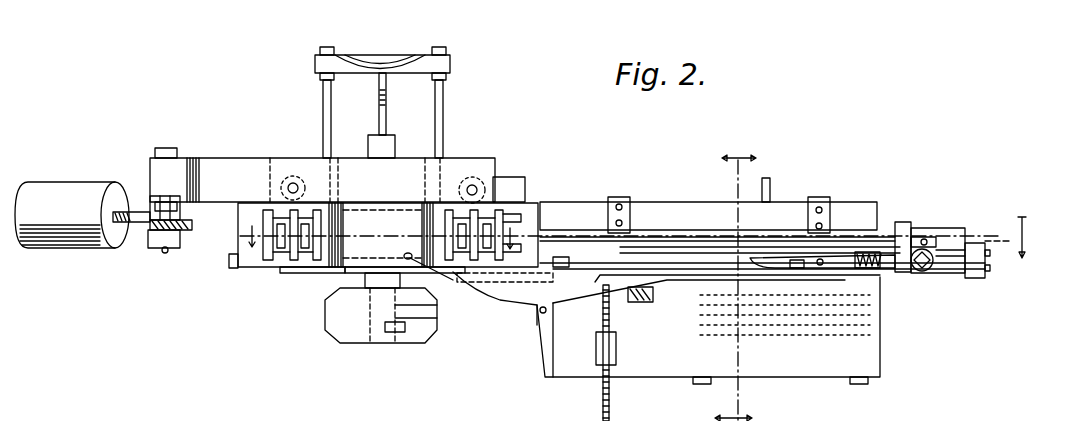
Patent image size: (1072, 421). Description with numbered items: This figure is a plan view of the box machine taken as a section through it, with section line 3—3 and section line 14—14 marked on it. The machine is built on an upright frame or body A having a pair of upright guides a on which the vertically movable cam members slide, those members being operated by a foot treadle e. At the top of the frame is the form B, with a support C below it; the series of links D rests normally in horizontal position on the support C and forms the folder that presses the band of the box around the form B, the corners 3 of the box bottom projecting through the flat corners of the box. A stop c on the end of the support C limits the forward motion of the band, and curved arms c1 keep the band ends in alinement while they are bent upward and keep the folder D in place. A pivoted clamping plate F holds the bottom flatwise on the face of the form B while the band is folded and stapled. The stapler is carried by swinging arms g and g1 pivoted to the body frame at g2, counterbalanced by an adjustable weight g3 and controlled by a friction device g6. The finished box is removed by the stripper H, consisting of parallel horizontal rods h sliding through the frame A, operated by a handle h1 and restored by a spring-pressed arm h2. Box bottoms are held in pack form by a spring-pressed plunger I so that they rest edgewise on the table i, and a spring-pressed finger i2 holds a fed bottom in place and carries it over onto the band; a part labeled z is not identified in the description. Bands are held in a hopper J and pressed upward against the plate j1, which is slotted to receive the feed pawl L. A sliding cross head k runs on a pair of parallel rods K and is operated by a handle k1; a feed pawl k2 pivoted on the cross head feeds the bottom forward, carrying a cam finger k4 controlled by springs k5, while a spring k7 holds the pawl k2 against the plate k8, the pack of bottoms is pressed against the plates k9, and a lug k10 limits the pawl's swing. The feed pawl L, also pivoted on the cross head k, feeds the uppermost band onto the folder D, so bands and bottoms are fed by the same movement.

The upright frame or body A is at (462, 170).
The upright guides a is at (291, 183).
The form B is at (358, 215).
The stripper H is at (315, 62).
The rods h is at (323, 115).
The handle h1 is at (382, 60).
The spring-pressed arm h2 is at (379, 115).
The support C is at (250, 250).
The stop c is at (229, 262).
The curved arms c1 is at (307, 270).
The series of links D is at (262, 265).
The pivoted clamping plate F is at (340, 325).
The table i is at (668, 328).
The spring-pressed finger i2 is at (432, 270).
The stop block z is at (634, 300).
The spring-pressed plunger I is at (612, 412).
The hopper J is at (560, 195).
The plate j1 is at (640, 215).
The feed finger or pawl L is at (838, 258).
The sliding cross head k is at (926, 273).
The handle k1 is at (899, 228).
The feed pawl or dog k2 is at (896, 275).
The cam finger k4 is at (755, 262).
The springs k5 is at (862, 273).
The spring k7 is at (862, 252).
The plate k8 is at (725, 278).
The plates k9 is at (580, 262).
The lug k10 is at (921, 237).
The parallel rods K is at (950, 265).
The foot treadle e is at (1013, 240).
The corners 3 is at (735, 278).
The section line 14 is at (395, 237).
The swinging arm g is at (148, 208).
The swinging arm g1 is at (172, 250).
The pivot g2 is at (158, 250).
The adjustable weight g3 is at (62, 236).
The friction device g6 is at (150, 232).